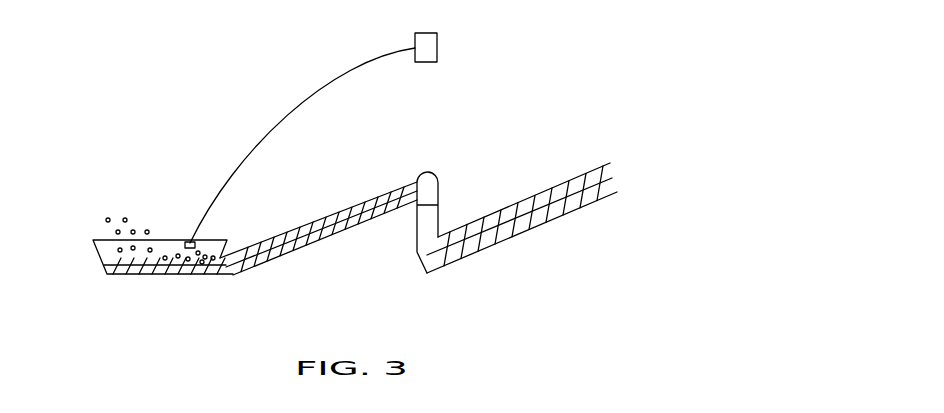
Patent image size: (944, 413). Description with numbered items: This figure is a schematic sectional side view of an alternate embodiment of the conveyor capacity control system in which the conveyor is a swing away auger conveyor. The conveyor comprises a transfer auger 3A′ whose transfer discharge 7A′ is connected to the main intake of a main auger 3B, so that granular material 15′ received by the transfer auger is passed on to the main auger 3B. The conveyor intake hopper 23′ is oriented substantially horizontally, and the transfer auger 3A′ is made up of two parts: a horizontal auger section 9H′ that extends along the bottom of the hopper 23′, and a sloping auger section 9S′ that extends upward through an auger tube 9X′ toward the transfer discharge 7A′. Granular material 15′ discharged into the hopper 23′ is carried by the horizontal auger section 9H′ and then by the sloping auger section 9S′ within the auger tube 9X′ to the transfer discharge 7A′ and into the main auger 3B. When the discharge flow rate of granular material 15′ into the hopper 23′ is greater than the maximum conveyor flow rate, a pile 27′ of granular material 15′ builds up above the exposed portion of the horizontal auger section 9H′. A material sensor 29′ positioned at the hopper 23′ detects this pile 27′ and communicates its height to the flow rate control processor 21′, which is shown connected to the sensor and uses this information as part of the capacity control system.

The transfer auger 3A′ is at (332, 214).
The main auger 3B is at (569, 213).
The transfer discharge 7A′ is at (440, 197).
The horizontal auger section 9H′ is at (163, 275).
The sloping auger section 9S′ is at (320, 239).
The auger tube 9X′ is at (263, 264).
The granular material 15′ is at (128, 215).
The flow rate control processor 21′ is at (437, 42).
The conveyor intake hopper 23′ is at (96, 256).
The pile 27′ is at (177, 253).
The material sensor 29′ is at (198, 241).